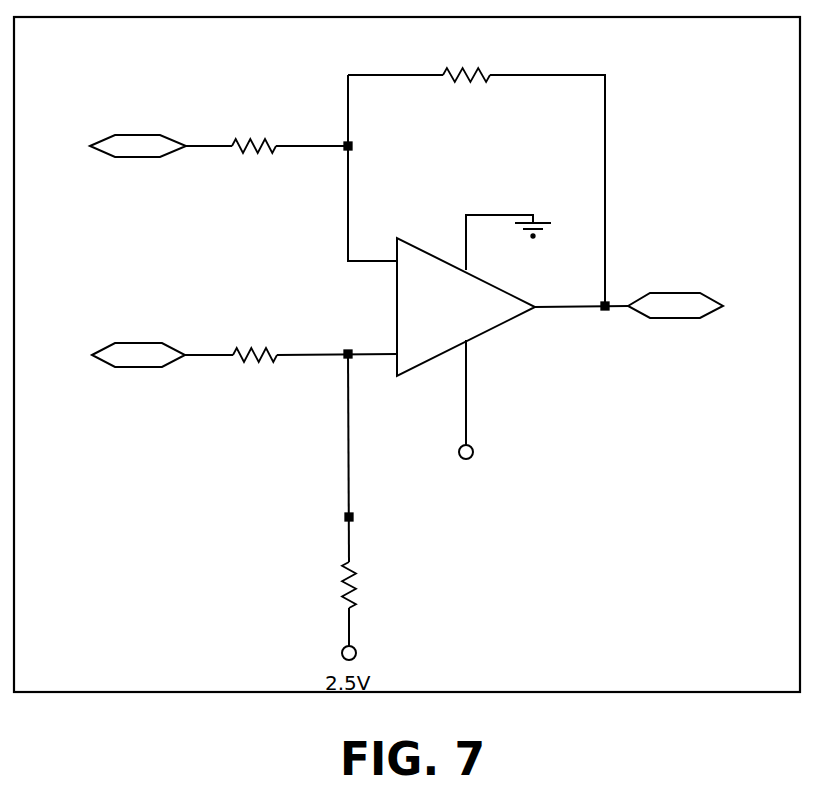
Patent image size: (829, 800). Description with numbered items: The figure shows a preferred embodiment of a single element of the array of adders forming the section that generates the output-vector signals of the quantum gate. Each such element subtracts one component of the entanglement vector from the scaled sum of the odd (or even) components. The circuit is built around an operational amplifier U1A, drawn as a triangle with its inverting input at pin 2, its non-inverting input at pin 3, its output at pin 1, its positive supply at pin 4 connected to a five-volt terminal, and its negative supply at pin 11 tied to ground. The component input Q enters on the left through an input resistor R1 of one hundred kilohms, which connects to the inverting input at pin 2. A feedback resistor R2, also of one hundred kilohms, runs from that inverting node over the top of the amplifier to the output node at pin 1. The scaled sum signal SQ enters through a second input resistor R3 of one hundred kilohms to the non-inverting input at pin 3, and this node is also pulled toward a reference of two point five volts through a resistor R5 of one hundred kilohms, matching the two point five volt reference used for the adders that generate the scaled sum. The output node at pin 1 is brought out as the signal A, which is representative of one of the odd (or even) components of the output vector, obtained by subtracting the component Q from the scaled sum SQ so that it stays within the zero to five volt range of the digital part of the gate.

The resistor R1 100k R1 is at (259, 147).
The feedback resistor R2 100k R2 is at (471, 75).
The resistor R3 100k R3 is at (261, 354).
The resistor R5 100k R5 is at (367, 585).
The operational amplifier TS914 U1A is at (457, 353).
The component input Q is at (138, 146).
The scaled sum signal SQ is at (138, 355).
The output signal A is at (675, 305).
The op amp output pin 1 is at (555, 324).
The inverting input pin 2 is at (375, 279).
The non-inverting input pin 3 is at (378, 372).
The positive supply pin 4 is at (467, 416).
The negative supply pin 11 is at (497, 242).